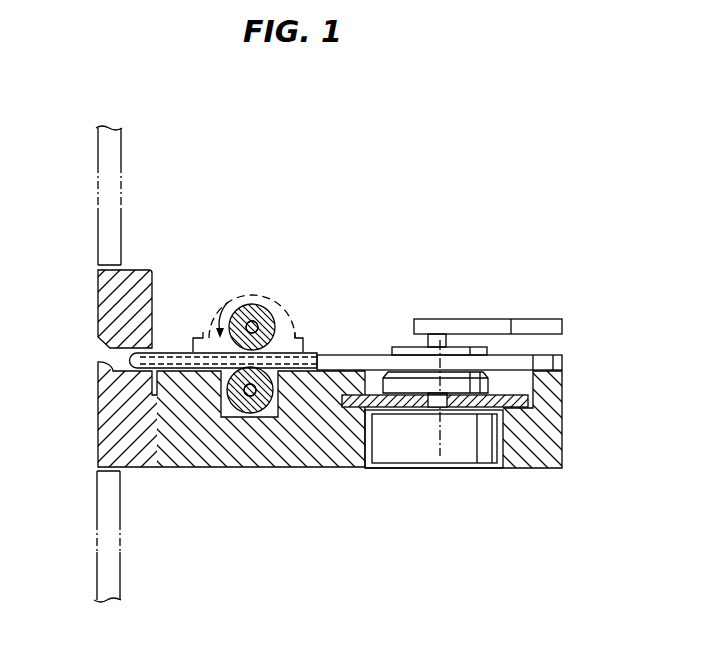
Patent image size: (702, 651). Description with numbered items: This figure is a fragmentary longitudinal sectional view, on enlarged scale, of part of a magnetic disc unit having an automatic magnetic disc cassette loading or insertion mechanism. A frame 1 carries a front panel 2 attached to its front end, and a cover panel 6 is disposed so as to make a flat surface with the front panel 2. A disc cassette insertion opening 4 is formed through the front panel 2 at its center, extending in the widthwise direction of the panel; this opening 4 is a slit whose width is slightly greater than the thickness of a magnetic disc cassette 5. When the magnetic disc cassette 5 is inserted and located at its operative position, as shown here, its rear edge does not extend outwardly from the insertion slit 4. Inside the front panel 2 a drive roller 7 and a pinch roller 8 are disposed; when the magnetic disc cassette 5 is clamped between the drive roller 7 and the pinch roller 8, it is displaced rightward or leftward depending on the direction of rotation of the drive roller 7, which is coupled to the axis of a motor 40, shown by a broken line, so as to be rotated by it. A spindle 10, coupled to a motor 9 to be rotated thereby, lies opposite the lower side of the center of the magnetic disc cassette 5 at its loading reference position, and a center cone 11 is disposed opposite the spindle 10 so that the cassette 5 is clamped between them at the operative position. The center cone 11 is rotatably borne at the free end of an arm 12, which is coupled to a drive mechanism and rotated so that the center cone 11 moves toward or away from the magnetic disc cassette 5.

The frame 1 is at (198, 467).
The front panel 2 is at (147, 282).
The disc cassette insertion opening 4 is at (98, 362).
The magnetic disc cassette 5 is at (562, 358).
The cover panel 6 is at (98, 197).
The drive roller 7 is at (262, 314).
The pinch roller 8 is at (277, 467).
The motor 9 is at (425, 453).
The spindle 10 is at (473, 392).
The center cone 11 is at (398, 348).
The arm 12 is at (520, 325).
The motor 40 is at (213, 308).